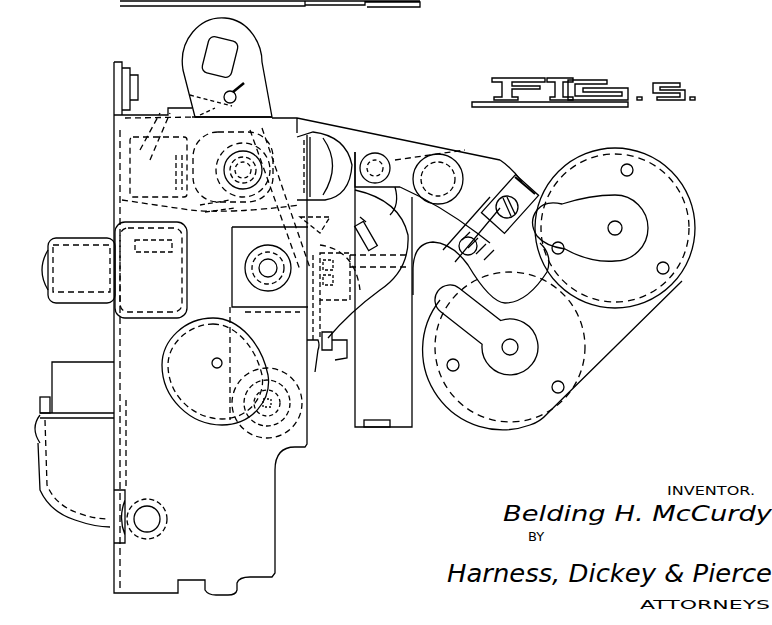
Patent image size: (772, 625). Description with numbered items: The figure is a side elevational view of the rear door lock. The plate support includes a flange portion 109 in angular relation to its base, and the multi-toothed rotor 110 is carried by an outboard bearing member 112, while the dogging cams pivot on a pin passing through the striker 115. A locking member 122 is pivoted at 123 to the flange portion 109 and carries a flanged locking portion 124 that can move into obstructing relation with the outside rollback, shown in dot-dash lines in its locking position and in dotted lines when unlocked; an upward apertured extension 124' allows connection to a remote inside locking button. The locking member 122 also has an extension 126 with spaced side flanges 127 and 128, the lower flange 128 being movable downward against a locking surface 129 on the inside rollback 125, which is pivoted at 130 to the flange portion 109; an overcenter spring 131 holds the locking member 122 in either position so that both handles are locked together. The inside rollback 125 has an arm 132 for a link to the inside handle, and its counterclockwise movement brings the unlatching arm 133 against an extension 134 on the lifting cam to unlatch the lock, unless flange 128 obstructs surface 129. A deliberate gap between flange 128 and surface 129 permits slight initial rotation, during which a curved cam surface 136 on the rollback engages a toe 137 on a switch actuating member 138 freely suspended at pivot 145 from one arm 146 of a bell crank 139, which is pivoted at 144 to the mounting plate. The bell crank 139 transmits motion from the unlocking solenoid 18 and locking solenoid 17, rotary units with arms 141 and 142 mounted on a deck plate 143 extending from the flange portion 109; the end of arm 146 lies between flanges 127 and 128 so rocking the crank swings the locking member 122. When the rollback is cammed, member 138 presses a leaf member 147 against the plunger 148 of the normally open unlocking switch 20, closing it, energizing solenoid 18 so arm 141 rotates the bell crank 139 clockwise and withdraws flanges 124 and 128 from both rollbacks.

The locking solenoid 17 is at (580, 372).
The unlocking solenoid 18 is at (680, 240).
The unlocking switch 20 is at (395, 418).
The flange portion 109 is at (137, 125).
The multi-toothed rotor 110 is at (78, 362).
The outboard bearing member 112 is at (95, 528).
The striker 115 is at (82, 237).
The locking member 122 is at (260, 74).
The pivot 123 is at (255, 165).
The flanged locking portion 124 is at (183, 199).
The upward apertured extension 124' is at (263, 50).
The inside rollback 125 is at (329, 367).
The extension 126 is at (352, 140).
The side flange 127 is at (323, 133).
The lower flange 128 is at (324, 182).
The locking surface 129 is at (306, 242).
The pivot 130 is at (271, 282).
The overcenter spring 131 is at (188, 68).
The arm 132 is at (290, 426).
The unlatching arm 133 is at (122, 193).
The extension 134 is at (147, 252).
The curved cam surface 136 is at (360, 265).
The toe 137 is at (375, 225).
The switch actuating member 138 is at (481, 250).
The bell crank 139 is at (402, 152).
The solenoid arm 141 is at (560, 207).
The solenoid arm 142 is at (483, 337).
The deck plate 143 is at (405, 150).
The pivot 144 is at (448, 166).
The pivot 145 is at (389, 167).
The bell crank arm 146 is at (440, 215).
The leaf member 147 is at (340, 362).
The plunger 148 is at (347, 338).